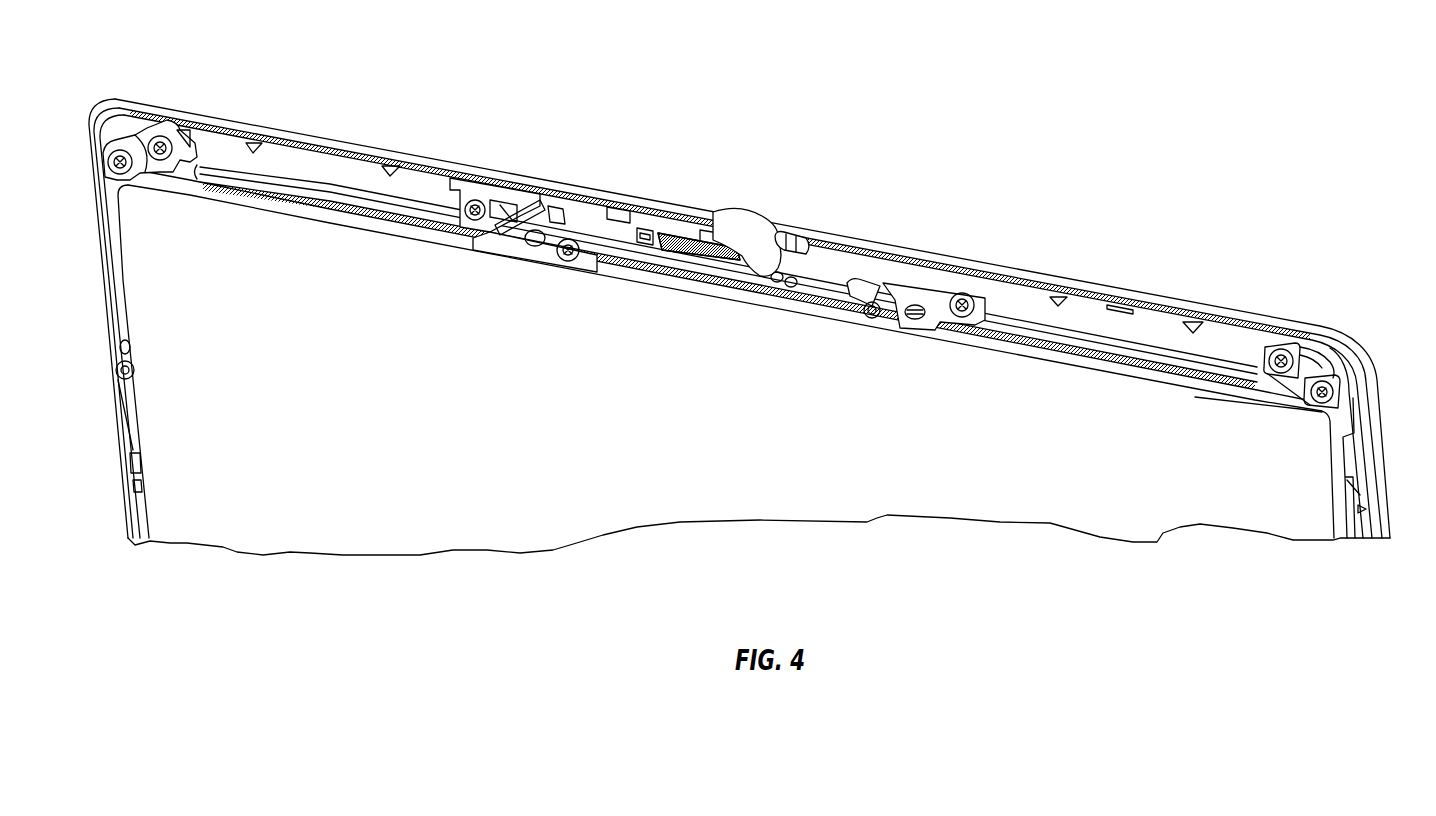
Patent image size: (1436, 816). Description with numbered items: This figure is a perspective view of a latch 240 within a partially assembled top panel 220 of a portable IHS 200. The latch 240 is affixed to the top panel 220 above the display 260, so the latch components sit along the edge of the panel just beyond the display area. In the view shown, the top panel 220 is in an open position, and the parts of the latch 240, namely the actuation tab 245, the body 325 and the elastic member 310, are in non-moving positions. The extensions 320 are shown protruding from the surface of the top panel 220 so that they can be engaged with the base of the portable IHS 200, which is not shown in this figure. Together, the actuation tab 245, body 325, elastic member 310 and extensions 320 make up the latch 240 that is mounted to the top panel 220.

The portable IHS 200 is at (1185, 160).
The top panel 220 is at (1385, 463).
The latch 240 is at (972, 357).
The actuation tab 245 is at (757, 212).
The display 260 is at (1138, 407).
The elastic member 310 is at (733, 210).
The extensions 320 is at (528, 195).
The body 325 is at (805, 240).